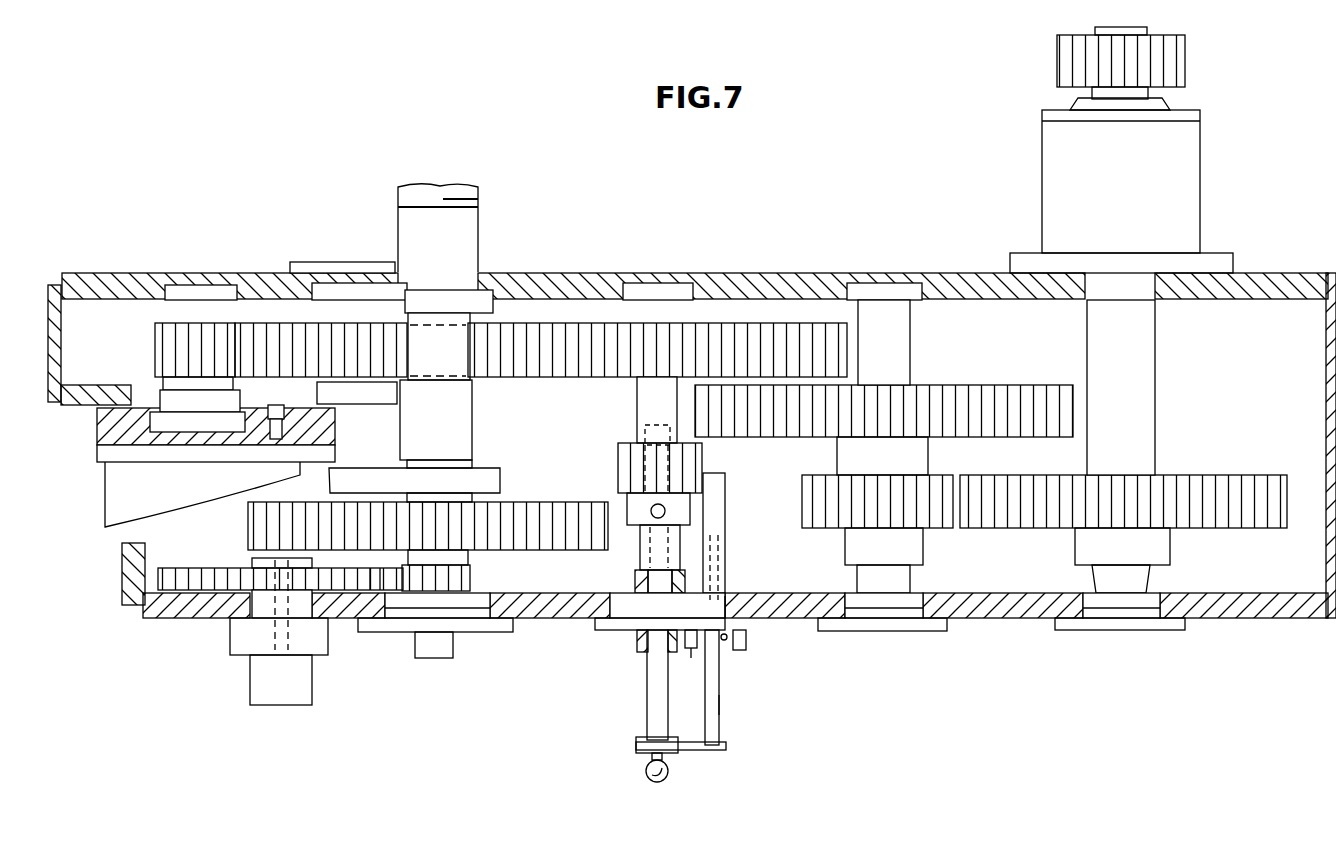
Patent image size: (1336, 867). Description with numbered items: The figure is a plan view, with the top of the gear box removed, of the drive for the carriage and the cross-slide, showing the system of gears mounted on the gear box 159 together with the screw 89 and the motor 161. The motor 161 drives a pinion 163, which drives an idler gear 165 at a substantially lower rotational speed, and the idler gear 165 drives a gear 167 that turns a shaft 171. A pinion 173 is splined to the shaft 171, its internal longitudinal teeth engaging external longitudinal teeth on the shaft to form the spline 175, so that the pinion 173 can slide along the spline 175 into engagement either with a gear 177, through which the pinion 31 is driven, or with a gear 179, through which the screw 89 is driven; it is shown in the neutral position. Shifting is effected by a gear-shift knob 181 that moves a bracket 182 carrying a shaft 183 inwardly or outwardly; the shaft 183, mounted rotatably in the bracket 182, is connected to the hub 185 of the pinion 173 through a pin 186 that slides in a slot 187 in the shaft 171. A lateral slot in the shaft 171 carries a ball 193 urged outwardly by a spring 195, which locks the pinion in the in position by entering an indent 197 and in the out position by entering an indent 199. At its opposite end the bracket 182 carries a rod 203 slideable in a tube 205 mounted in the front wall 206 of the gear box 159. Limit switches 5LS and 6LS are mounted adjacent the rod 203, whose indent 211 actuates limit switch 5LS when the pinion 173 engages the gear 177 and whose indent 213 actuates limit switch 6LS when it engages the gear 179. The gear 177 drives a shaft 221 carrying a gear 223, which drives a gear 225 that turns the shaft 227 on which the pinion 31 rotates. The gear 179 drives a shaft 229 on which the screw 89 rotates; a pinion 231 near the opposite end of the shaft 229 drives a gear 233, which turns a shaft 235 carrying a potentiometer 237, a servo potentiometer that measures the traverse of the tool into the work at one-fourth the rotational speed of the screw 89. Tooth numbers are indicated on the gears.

The pinion 31 is at (1058, 50).
The screw 89 is at (497, 208).
The gear box 159 is at (768, 256).
The motor 161 is at (105, 488).
The pinion 163 is at (155, 353).
The idler gear 165 is at (308, 328).
The gear 167 is at (563, 334).
The shaft 171 is at (637, 400).
The pinion 173 is at (618, 445).
The spline 175 is at (640, 566).
The gear 177 is at (1022, 386).
The gear 179 is at (542, 504).
The gear-shift knob 181 is at (647, 775).
The bracket 182 is at (690, 750).
The shaft 183 is at (647, 718).
The hub 185 is at (690, 510).
The pin 186 is at (665, 513).
The slot 187 is at (645, 435).
The ball 193 is at (685, 585).
The spring 195 is at (635, 586).
The indent 197 is at (690, 563).
The indent 199 is at (637, 644).
The rod 203 is at (719, 738).
The tube 205 is at (714, 478).
The front wall 206 is at (580, 612).
The indent 211 is at (735, 600).
The indent 213 is at (719, 700).
The shaft 221 is at (905, 346).
The gear 223 is at (944, 522).
The gear 225 is at (1056, 528).
The shaft 227 is at (1148, 398).
The shaft 229 is at (472, 460).
The pinion 231 is at (470, 582).
The gear 233 is at (376, 576).
The shaft 235 is at (245, 563).
The potentiometer 237 is at (258, 688).
The limit switch 5LS is at (687, 654).
The limit switch 6LS is at (742, 650).